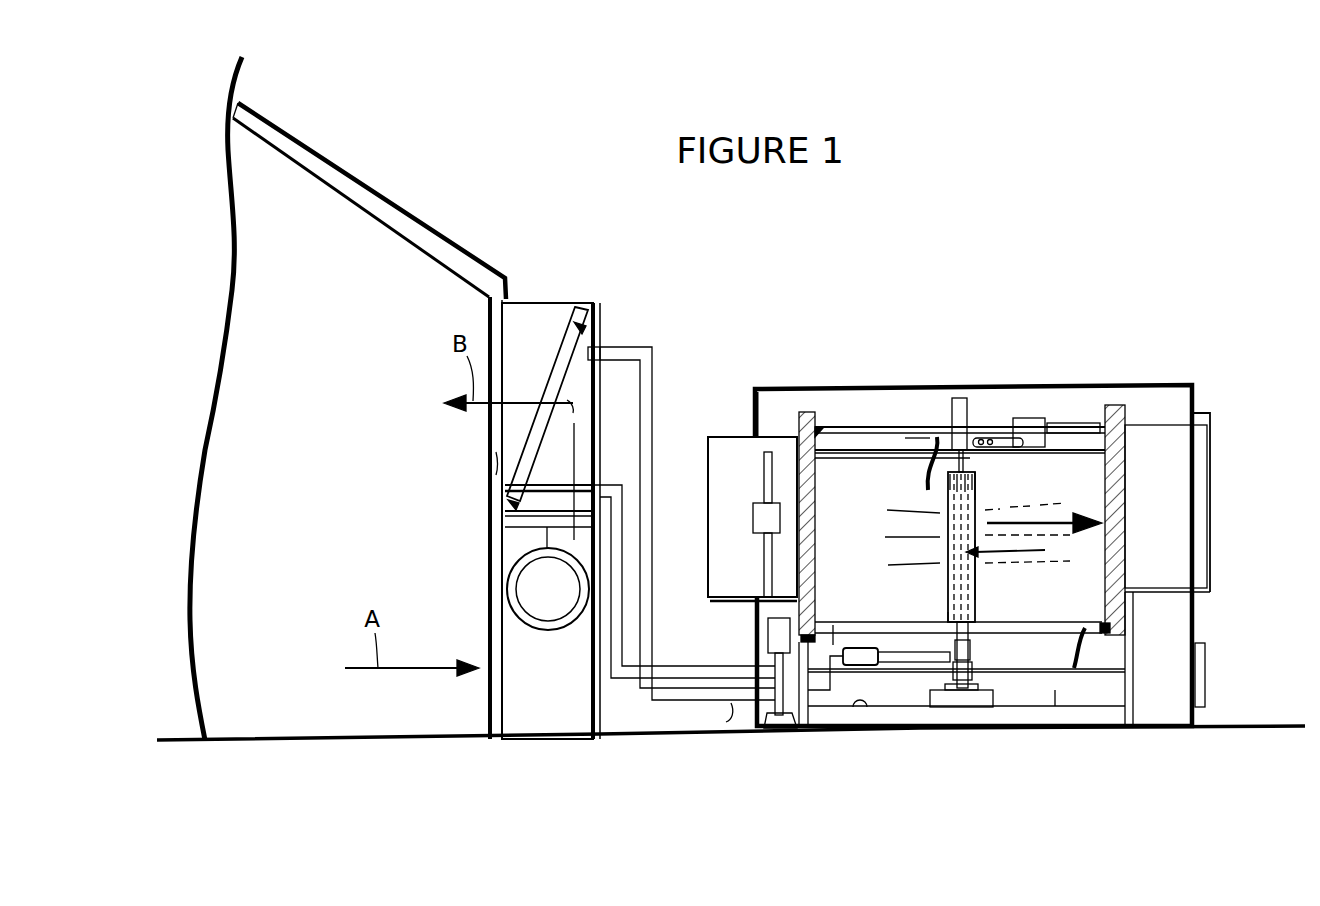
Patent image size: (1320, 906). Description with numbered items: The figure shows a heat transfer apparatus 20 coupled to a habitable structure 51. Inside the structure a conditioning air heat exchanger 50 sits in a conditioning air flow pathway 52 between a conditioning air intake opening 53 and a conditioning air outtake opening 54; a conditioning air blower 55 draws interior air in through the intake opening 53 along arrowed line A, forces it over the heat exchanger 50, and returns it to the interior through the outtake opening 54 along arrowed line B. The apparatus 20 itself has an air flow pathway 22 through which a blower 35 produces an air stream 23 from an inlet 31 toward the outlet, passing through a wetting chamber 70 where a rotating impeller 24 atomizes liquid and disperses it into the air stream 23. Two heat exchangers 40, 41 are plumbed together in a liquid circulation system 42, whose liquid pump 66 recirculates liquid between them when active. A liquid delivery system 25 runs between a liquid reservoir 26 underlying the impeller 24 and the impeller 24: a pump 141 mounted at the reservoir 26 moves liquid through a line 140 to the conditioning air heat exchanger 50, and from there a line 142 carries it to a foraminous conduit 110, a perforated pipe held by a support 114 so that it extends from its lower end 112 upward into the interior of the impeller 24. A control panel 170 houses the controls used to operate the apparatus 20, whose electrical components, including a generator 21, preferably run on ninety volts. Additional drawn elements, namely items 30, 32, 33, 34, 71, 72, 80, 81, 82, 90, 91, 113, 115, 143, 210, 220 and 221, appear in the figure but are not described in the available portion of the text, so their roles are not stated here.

The heat transfer apparatus 20 is at (932, 270).
The generator 21 is at (1048, 374).
The air flow pathway 22 is at (870, 566).
The air stream 23 is at (1047, 522).
The impeller 24 is at (1018, 553).
The liquid delivery system 25 is at (663, 664).
The liquid reservoir 26 is at (1055, 692).
The rear insulated wall 30 is at (1111, 404).
The inlet 31 is at (724, 436).
The front housing wall 32 is at (758, 428).
The rear compartment 33 is at (1155, 424).
The rear housing wall 34 is at (1195, 410).
The blower 35 is at (762, 522).
The heat exchanger 40 is at (812, 411).
The heat exchanger 41 is at (1127, 612).
The liquid circulation system 42 is at (865, 418).
The conditioning air heat exchanger 50 is at (560, 350).
The habitable structure 51 is at (430, 225).
The conditioning air flow pathway 52 is at (538, 681).
The conditioning air intake opening 53 is at (497, 622).
The conditioning air outtake opening 54 is at (495, 458).
The conditioning air blower 55 is at (538, 581).
The liquid pump 66 is at (1030, 417).
The wetting chamber 70 is at (1048, 578).
The guide rail 71 is at (825, 458).
The base plate 72 is at (868, 708).
The filter cylinder 80 is at (943, 583).
The filter top 81 is at (977, 490).
The filter bottom 82 is at (977, 614).
The upper valve 90 is at (963, 397).
The fluid line 91 is at (925, 477).
The foraminous conduit 110 is at (868, 648).
The lower end 112 is at (977, 642).
The lower coupling 113 is at (979, 655).
The support 114 is at (928, 683).
The support base 115 is at (946, 708).
The line 140 is at (613, 712).
The pump 141 is at (782, 628).
The line 142 is at (644, 448).
The connection line 143 is at (834, 644).
The control panel 170 is at (1206, 690).
The drain outlet 210 is at (728, 702).
The upper inlet 220 is at (910, 437).
The lower fluid 221 is at (1088, 640).